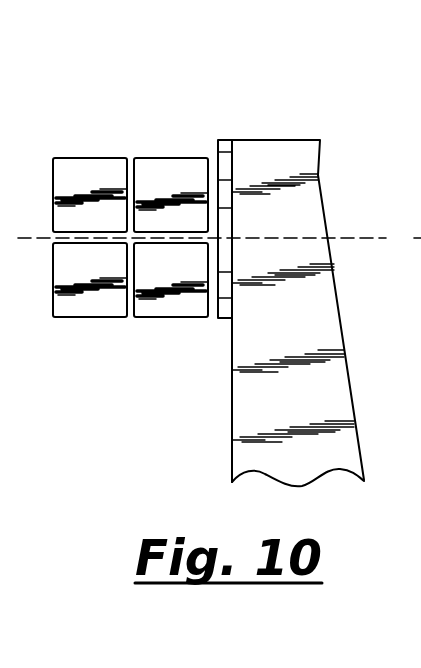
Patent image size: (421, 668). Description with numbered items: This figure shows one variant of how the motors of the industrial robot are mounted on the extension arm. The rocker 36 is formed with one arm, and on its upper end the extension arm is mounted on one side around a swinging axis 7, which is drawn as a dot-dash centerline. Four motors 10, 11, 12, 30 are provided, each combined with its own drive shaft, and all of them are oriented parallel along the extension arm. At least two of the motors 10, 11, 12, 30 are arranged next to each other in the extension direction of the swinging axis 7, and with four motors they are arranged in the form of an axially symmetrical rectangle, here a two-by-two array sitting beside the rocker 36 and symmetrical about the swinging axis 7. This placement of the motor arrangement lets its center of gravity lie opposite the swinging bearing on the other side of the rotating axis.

The swinging axis 7 is at (254, 232).
The motor 10 is at (188, 178).
The motor 11 is at (157, 263).
The motor 12 is at (90, 172).
The motor 30 is at (92, 258).
The rocker 36 is at (258, 333).